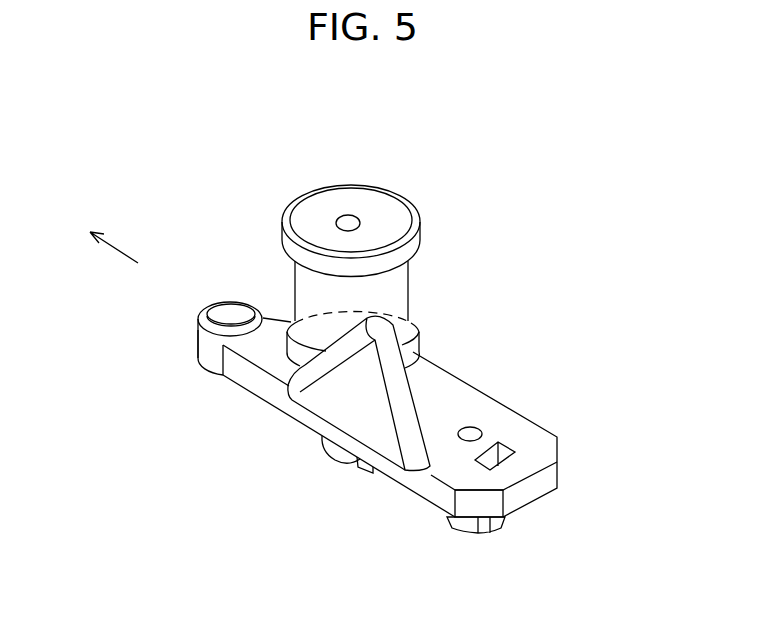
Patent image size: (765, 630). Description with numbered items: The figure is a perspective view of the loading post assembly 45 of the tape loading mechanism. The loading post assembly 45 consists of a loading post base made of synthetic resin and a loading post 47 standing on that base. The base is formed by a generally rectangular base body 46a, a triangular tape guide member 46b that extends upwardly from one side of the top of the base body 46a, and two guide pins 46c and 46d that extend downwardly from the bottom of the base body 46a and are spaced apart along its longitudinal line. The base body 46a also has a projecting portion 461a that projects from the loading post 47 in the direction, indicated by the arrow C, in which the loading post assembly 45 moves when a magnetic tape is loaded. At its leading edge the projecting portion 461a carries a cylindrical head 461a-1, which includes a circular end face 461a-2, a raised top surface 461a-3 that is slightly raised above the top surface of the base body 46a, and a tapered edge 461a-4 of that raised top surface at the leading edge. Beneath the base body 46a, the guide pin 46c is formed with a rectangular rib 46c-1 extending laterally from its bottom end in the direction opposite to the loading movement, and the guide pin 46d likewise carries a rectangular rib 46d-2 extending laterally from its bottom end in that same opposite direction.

The loading post assembly 45 is at (540, 151).
The base body 46a is at (466, 387).
The tape guide member 46b is at (288, 382).
The guide pin 46c is at (342, 457).
The rectangular rib 46c-1 is at (362, 474).
The guide pin 46d is at (460, 531).
The rectangular rib 46d-2 is at (485, 531).
The loading post 47 is at (421, 196).
The projecting portion 461a is at (230, 408).
The cylindrical head 461a-1 is at (181, 328).
The circular end face 461a-2 is at (197, 343).
The raised top surface 461a-3 is at (233, 310).
The tapered edge 461a-4 is at (201, 318).